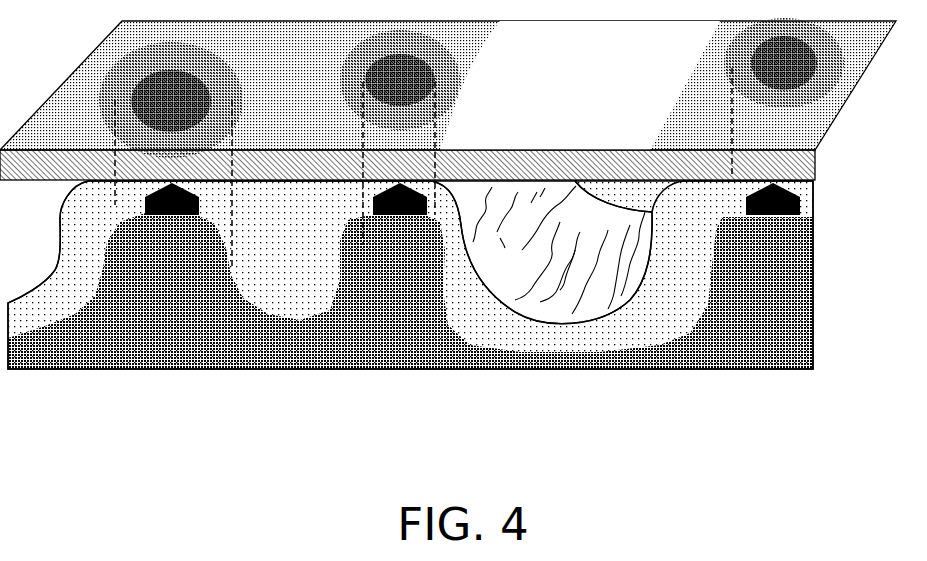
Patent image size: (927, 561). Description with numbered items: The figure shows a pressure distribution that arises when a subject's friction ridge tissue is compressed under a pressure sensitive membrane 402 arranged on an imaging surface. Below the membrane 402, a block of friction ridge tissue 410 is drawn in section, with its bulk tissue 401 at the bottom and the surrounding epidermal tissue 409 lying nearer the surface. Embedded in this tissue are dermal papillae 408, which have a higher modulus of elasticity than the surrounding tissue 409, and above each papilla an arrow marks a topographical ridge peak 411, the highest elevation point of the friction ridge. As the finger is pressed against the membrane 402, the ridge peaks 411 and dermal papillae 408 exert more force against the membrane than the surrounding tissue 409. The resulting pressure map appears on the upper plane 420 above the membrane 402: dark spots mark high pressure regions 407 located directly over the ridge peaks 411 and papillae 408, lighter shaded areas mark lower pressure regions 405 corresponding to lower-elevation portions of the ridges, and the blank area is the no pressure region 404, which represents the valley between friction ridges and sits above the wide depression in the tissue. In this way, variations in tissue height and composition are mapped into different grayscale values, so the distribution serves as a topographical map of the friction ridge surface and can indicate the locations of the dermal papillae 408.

The bulk substrate region 401 is at (410, 290).
The pressure sensitive membrane 402 is at (407, 165).
The no pressure region 404 is at (580, 85).
The lower pressure regions 405 is at (448, 85).
The high pressure regions 407 is at (471, 144).
The dermal papillae 408 is at (460, 258).
The surrounding tissue 409 is at (410, 275).
The substrate 410 is at (449, 275).
The topographical ridge peaks 411 is at (472, 199).
The mask layer 420 is at (903, 22).